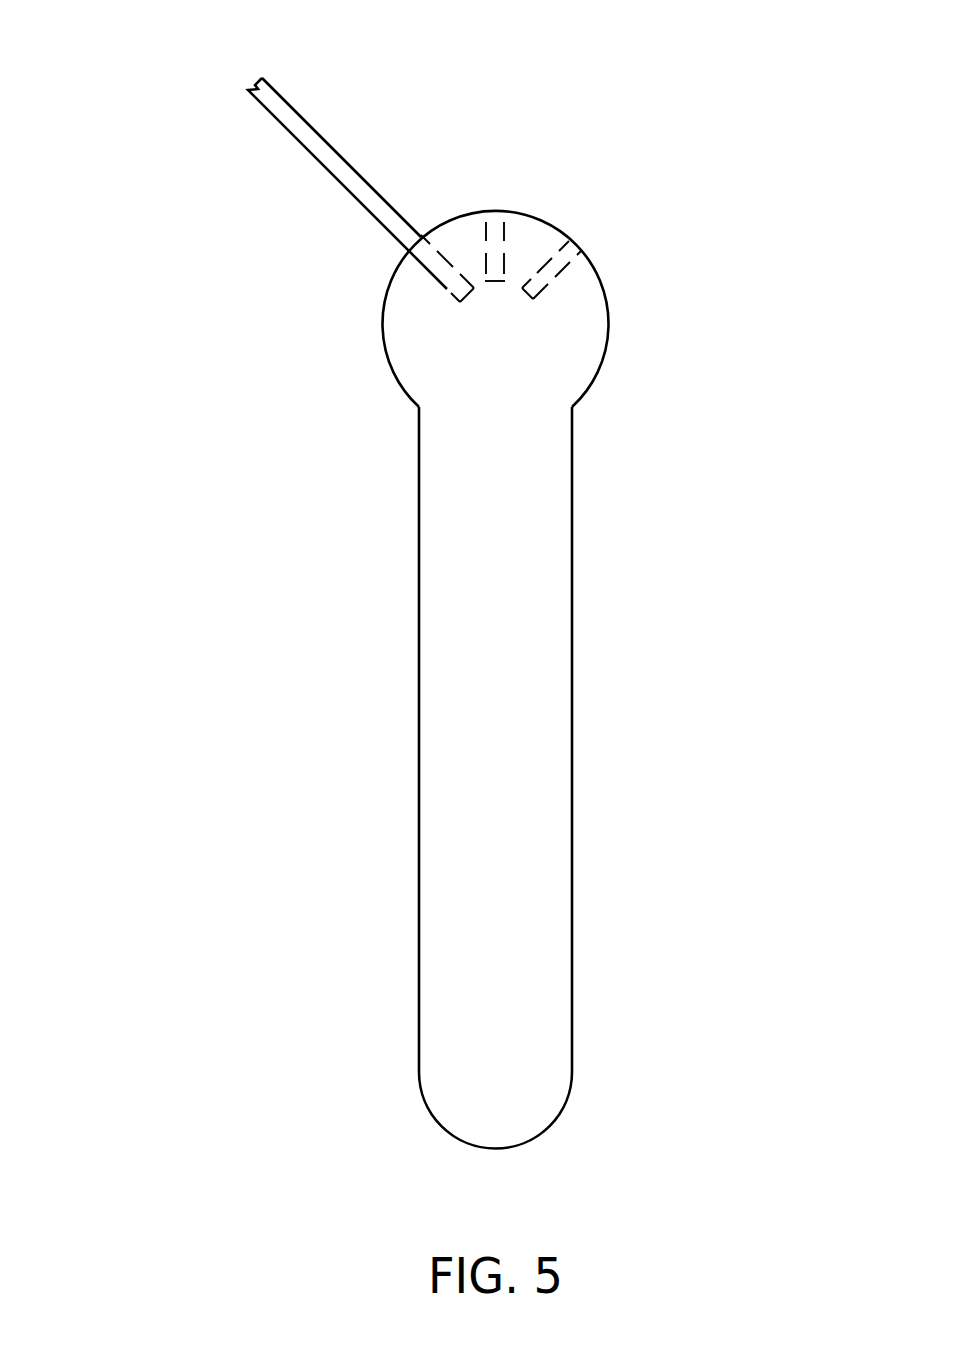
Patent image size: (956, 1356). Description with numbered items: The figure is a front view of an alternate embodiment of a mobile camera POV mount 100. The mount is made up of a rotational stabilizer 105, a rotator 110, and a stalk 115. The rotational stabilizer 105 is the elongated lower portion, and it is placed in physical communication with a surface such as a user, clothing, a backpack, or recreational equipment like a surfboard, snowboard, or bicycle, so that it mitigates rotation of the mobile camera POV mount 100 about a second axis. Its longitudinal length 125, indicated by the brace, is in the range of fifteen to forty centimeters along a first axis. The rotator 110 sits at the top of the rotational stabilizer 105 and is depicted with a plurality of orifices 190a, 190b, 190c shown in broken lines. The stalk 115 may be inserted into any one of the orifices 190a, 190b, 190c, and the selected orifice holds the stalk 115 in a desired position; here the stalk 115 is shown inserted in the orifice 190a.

The mobile camera POV mount 100 is at (160, 68).
The rotational stabilizer 105 is at (419, 594).
The rotator 110 is at (604, 350).
The stalk 115 is at (320, 164).
The longitudinal length 125 is at (663, 408).
The orifice 190a is at (417, 243).
The orifice 190b is at (492, 208).
The orifice 190c is at (580, 249).